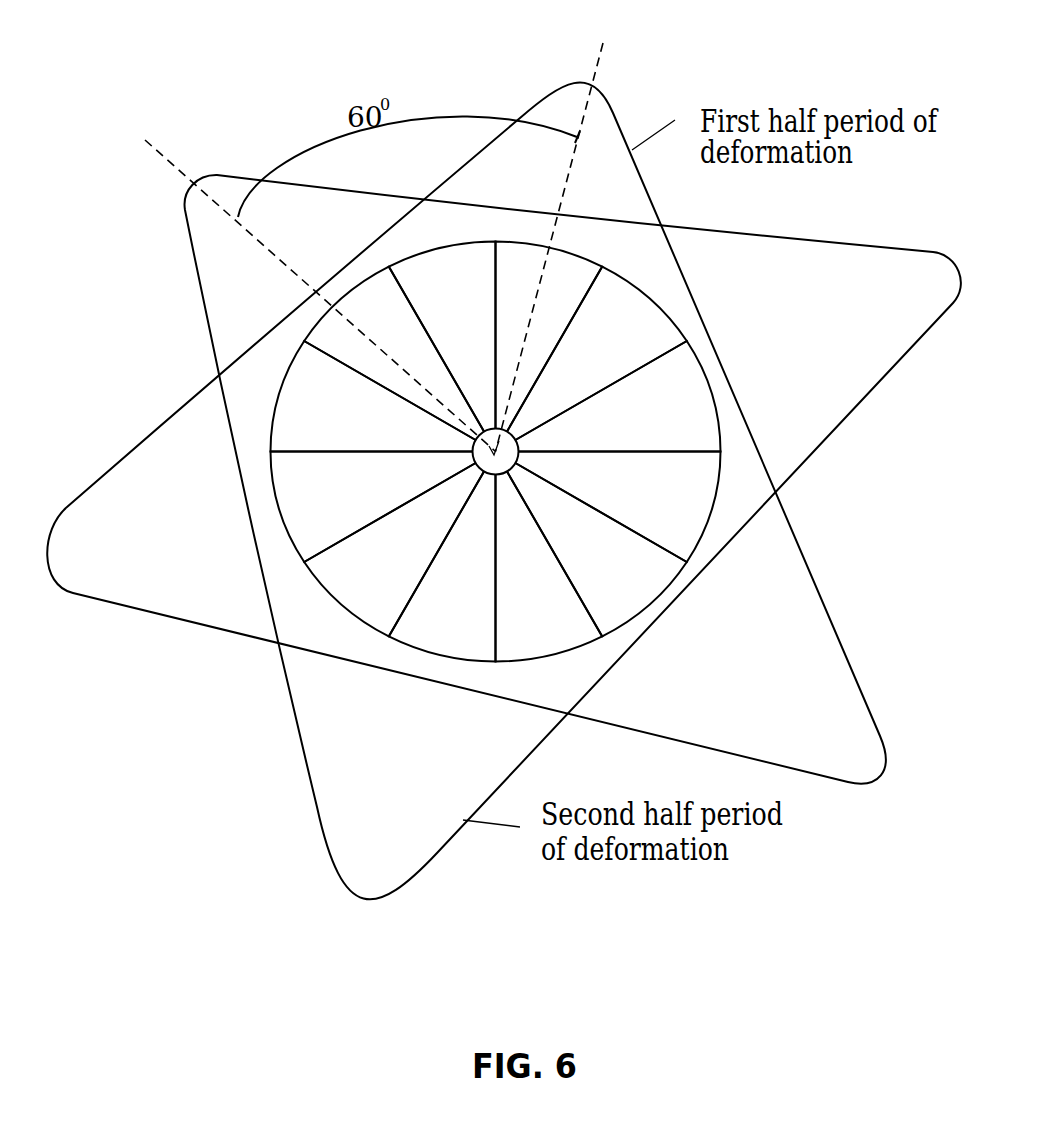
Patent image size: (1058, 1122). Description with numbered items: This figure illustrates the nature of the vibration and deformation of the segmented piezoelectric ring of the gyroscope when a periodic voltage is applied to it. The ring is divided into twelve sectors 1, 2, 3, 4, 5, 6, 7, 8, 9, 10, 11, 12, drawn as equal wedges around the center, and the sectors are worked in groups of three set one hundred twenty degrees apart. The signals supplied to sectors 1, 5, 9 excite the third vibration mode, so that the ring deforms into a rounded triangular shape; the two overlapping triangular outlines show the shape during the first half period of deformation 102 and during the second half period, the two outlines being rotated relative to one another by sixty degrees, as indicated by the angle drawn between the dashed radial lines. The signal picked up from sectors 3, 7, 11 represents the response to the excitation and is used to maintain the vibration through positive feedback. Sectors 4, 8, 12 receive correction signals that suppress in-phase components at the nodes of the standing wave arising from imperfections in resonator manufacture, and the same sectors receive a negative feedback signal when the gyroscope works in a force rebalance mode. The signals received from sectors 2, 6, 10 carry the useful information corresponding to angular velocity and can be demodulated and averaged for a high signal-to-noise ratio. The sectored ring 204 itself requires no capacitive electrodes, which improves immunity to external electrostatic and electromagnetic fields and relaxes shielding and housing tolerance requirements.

The deformed shell in first half period of deformation 102 is at (618, 110).
The sectored disc divided into twelve segments 204 is at (610, 452).
The sector 1 is at (549, 337).
The sector 2 is at (597, 353).
The sector 3 is at (617, 396).
The sector 4 is at (617, 507).
The sector 5 is at (597, 549).
The sector 6 is at (549, 566).
The sector 7 is at (442, 566).
The sector 8 is at (394, 549).
The sector 9 is at (373, 507).
The sector 10 is at (373, 396).
The sector 11 is at (394, 353).
The sector 12 is at (442, 337).